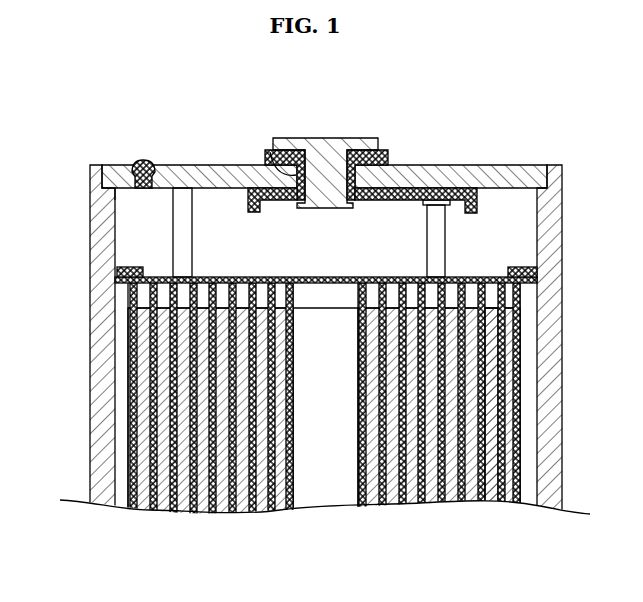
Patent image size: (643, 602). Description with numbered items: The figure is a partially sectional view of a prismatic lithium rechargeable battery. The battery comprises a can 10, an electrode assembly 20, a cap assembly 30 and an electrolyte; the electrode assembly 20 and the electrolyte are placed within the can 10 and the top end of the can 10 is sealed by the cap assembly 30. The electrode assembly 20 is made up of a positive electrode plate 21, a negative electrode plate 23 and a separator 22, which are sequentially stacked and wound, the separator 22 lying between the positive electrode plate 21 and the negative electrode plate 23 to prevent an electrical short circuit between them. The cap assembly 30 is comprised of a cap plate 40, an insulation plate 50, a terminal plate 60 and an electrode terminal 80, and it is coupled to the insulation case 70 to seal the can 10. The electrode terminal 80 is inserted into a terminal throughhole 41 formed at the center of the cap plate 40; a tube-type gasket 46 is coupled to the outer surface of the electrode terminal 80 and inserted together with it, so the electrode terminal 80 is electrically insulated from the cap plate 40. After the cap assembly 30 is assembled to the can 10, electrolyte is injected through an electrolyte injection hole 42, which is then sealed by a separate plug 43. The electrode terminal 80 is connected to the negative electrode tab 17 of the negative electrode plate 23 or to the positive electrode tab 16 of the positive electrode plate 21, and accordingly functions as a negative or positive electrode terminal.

The can 10 is at (558, 428).
The positive electrode tab 16 is at (178, 215).
The negative electrode tab 17 is at (444, 245).
The electrode assembly 20 is at (374, 425).
The positive electrode plate 21 is at (505, 502).
The separator 22 is at (517, 502).
The negative electrode plate 23 is at (487, 502).
The cap assembly 30 is at (361, 161).
The cap plate 40 is at (493, 164).
The terminal throughhole 41 is at (271, 149).
The electrolyte injection hole 42 is at (131, 182).
The plug 43 is at (143, 160).
The gasket 46 is at (386, 148).
The insulation plate 50 is at (478, 203).
The terminal plate 60 is at (389, 205).
The insulation case 70 is at (152, 278).
The electrode terminal 80 is at (323, 146).